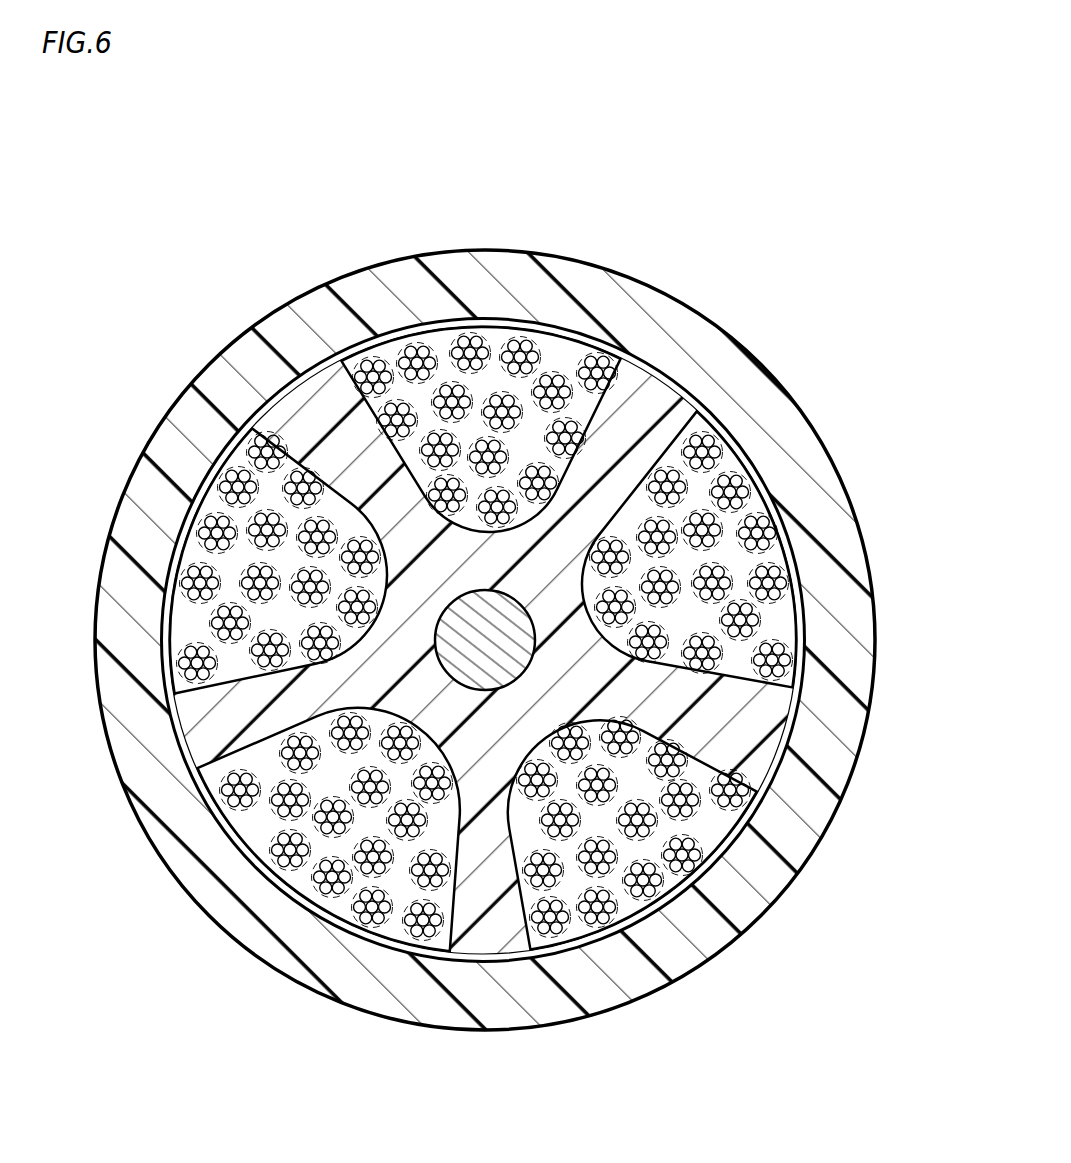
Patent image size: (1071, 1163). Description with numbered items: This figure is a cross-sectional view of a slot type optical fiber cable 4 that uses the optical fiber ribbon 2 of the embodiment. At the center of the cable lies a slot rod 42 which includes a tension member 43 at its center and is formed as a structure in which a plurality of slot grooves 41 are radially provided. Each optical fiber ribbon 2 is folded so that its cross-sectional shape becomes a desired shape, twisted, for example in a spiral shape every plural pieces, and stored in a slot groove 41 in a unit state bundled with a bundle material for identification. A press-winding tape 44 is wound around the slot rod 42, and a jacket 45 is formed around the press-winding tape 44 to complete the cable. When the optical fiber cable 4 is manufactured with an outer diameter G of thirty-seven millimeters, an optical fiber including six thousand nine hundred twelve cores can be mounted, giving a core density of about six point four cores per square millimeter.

The optical fiber cable 4 is at (695, 1097).
The optical fiber ribbon 2 is at (557, 360).
The slot groove 41 is at (440, 333).
The slot rod 42 is at (313, 407).
The tension member 43 is at (457, 660).
The press-winding tape 44 is at (717, 880).
The jacket 45 is at (207, 378).
The outer diameter G is at (321, 284).